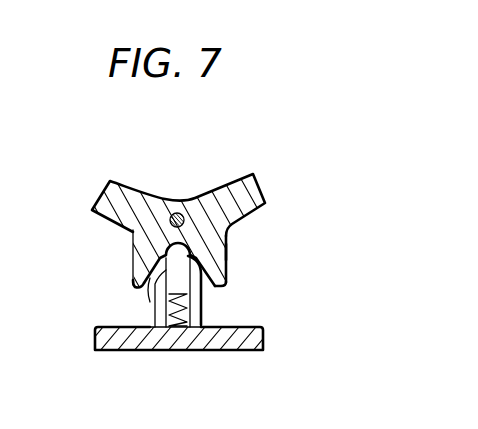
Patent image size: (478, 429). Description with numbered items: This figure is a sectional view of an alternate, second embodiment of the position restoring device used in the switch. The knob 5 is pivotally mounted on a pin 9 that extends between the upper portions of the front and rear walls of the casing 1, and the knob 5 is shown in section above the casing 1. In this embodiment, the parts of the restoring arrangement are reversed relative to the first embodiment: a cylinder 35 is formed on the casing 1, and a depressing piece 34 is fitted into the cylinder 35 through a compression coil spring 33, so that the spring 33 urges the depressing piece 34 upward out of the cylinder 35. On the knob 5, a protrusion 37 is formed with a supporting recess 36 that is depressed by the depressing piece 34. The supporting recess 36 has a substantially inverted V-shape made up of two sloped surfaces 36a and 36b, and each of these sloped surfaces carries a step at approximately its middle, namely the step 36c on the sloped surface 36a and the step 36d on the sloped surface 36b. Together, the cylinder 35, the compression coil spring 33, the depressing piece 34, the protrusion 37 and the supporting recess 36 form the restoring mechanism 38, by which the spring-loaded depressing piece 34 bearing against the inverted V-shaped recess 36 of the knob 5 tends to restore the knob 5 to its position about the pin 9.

The casing 1 is at (102, 353).
The knob 5 is at (140, 190).
The pin 9 is at (184, 212).
The compression coil spring 33 is at (203, 311).
The depressing piece 34 is at (157, 285).
The cylinder 35 is at (153, 333).
The supporting recess 36 is at (229, 234).
The sloped surface 36a is at (222, 290).
The sloped surface 36b is at (140, 286).
The step 36c is at (229, 267).
The step 36d is at (157, 259).
The protrusion 37 is at (229, 251).
The restoring mechanism 38 is at (118, 294).